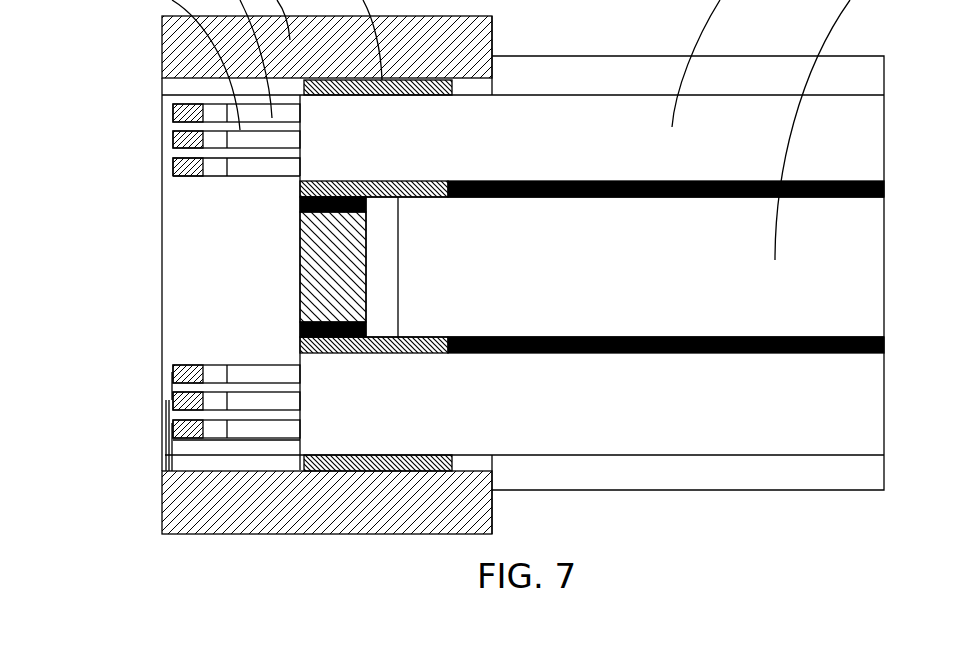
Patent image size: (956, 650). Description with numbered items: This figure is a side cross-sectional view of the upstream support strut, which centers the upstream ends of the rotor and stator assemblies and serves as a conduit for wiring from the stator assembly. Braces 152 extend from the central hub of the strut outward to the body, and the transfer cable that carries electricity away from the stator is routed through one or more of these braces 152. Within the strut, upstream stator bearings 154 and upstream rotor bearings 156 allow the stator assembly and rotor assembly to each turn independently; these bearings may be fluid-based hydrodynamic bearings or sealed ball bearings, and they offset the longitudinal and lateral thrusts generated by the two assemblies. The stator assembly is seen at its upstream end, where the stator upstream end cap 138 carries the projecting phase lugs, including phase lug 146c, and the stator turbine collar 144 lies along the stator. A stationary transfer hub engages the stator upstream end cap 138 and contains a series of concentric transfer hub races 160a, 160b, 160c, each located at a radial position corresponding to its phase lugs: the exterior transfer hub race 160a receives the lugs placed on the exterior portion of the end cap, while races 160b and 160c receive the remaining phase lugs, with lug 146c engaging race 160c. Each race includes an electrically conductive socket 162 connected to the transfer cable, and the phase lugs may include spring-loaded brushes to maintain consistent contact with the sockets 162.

The stator upstream end cap 138 is at (165, 458).
The stator turbine collar 144 is at (585, 80).
The phase lug 146c is at (197, 118).
The brace 152 is at (192, 517).
The upstream stator bearing 154 is at (345, 455).
The upstream rotor bearing 156 is at (422, 180).
The exterior transfer hub race 160a is at (197, 147).
The transfer hub race 160b is at (195, 173).
The transfer hub race 160c is at (174, 175).
The electrically conductive socket 162 is at (173, 372).